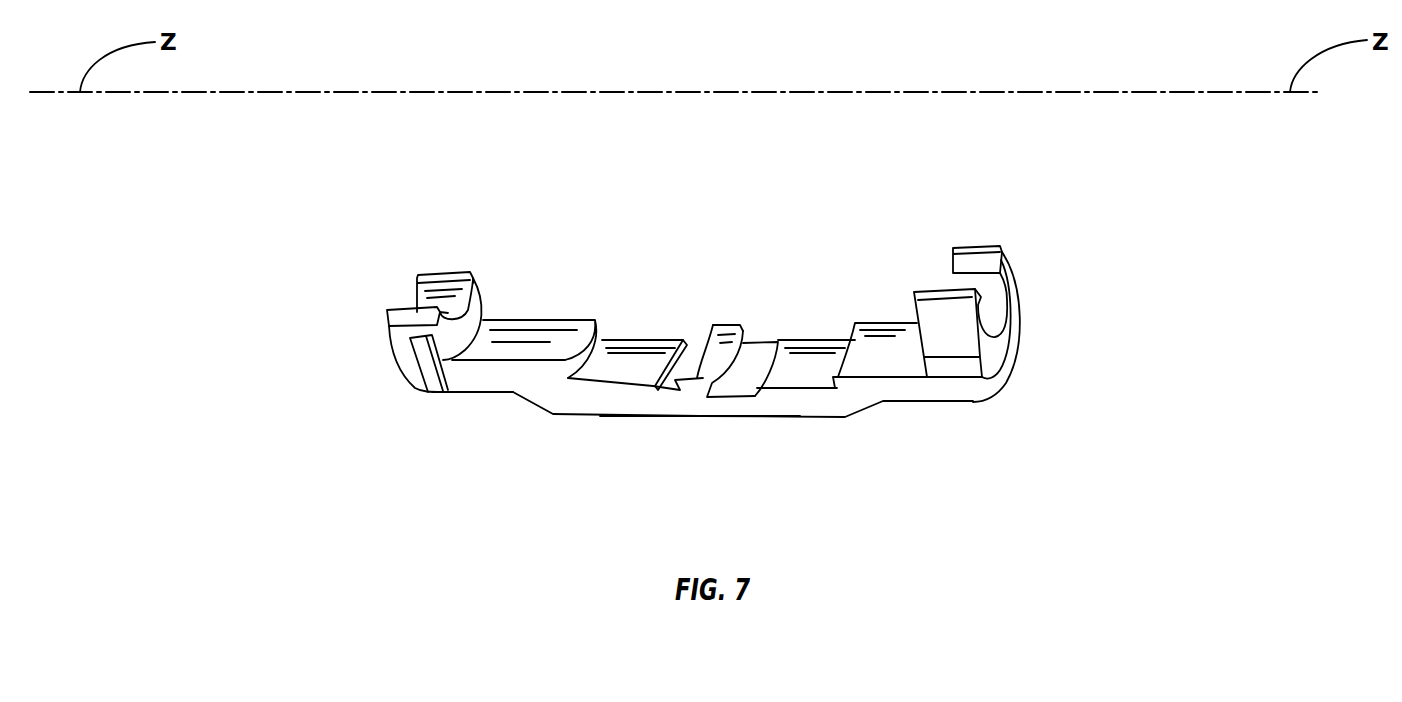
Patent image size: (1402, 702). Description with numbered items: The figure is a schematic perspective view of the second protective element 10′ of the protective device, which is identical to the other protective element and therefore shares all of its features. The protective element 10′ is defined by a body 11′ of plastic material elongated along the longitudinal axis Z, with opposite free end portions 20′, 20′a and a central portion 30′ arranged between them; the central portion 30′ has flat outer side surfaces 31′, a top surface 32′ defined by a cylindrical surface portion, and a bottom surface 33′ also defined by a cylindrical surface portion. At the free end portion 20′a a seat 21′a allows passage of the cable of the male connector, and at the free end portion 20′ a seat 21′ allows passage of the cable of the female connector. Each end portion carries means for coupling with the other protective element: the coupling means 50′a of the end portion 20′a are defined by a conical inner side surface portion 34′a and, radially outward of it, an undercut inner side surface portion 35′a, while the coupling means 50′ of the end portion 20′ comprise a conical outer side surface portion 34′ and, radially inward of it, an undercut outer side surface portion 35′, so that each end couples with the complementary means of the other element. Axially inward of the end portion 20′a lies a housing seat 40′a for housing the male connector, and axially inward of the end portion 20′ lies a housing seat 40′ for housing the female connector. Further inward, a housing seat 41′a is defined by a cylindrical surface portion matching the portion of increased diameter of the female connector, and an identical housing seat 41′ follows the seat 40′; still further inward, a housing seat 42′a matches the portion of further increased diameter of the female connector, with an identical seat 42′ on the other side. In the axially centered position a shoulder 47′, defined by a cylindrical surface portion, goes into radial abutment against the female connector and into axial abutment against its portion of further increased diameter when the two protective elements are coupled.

The protective element 10′ is at (1107, 183).
The body 11′ is at (713, 432).
The free end portion 20′ is at (398, 400).
The free end portion 20′a is at (983, 423).
The seat 21′ is at (397, 297).
The seat 21′a is at (1028, 268).
The central portion 30′ is at (760, 422).
The flat outer side surface 31′ is at (548, 400).
The top surface 32′ is at (665, 420).
The bottom surface 33′ is at (643, 335).
The conical outer side surface portion 34′ is at (483, 310).
The conical inner side surface portion 34′a is at (950, 255).
The undercut outer side surface portion 35′ is at (478, 285).
The undercut inner side surface portion 35′a is at (952, 282).
The housing seat 40′ is at (540, 320).
The housing seat 40′a is at (895, 320).
The housing seat 41′ is at (617, 340).
The housing seat 41′a is at (813, 338).
The housing seat 42′ is at (700, 340).
The housing seat 42′a is at (760, 340).
The shoulder 47′ is at (728, 322).
The coupling means 50′ is at (372, 317).
The coupling means 50′a is at (1045, 287).